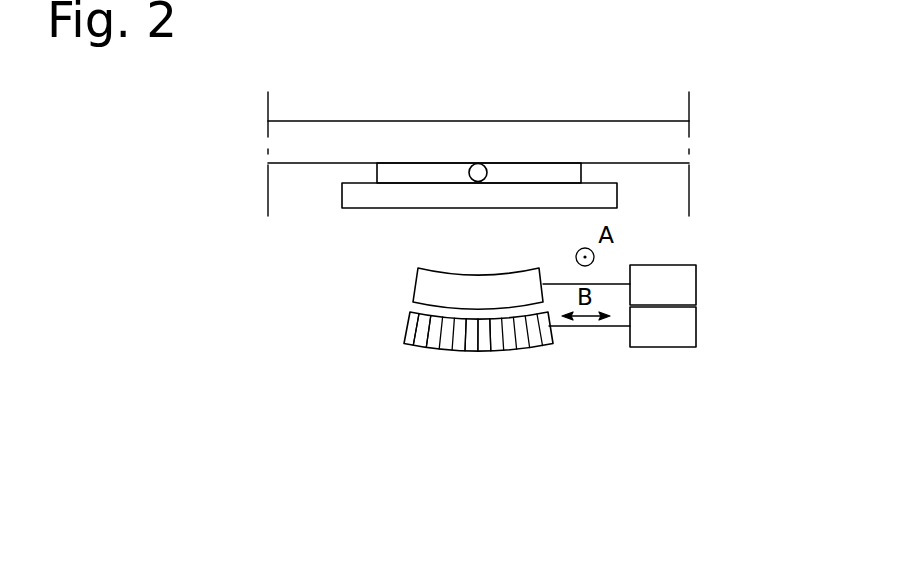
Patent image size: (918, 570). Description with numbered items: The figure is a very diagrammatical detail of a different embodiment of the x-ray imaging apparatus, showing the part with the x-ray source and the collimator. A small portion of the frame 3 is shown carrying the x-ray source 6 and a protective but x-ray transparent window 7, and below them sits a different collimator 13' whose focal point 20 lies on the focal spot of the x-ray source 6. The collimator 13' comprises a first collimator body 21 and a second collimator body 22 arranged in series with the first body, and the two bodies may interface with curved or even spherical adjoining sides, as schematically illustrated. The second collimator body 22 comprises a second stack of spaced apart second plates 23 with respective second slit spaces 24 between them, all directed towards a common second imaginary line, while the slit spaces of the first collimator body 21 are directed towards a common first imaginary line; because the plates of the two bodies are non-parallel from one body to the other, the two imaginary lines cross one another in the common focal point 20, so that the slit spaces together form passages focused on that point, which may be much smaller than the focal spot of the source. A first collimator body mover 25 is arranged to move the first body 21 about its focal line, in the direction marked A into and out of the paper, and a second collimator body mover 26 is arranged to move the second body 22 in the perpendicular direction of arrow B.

The frame 3 is at (336, 150).
The x-ray source 6 is at (527, 172).
The protective x-ray transparent window 7 is at (353, 195).
The focal point 20 is at (470, 163).
The first collimator body 21 is at (429, 288).
The second collimator body 22 is at (409, 329).
The second plates 23 is at (420, 345).
The second slit spaces 24 is at (472, 351).
The first collimator body mover 25 is at (682, 285).
The second collimator body mover 26 is at (672, 331).
The collimator 13' is at (391, 335).